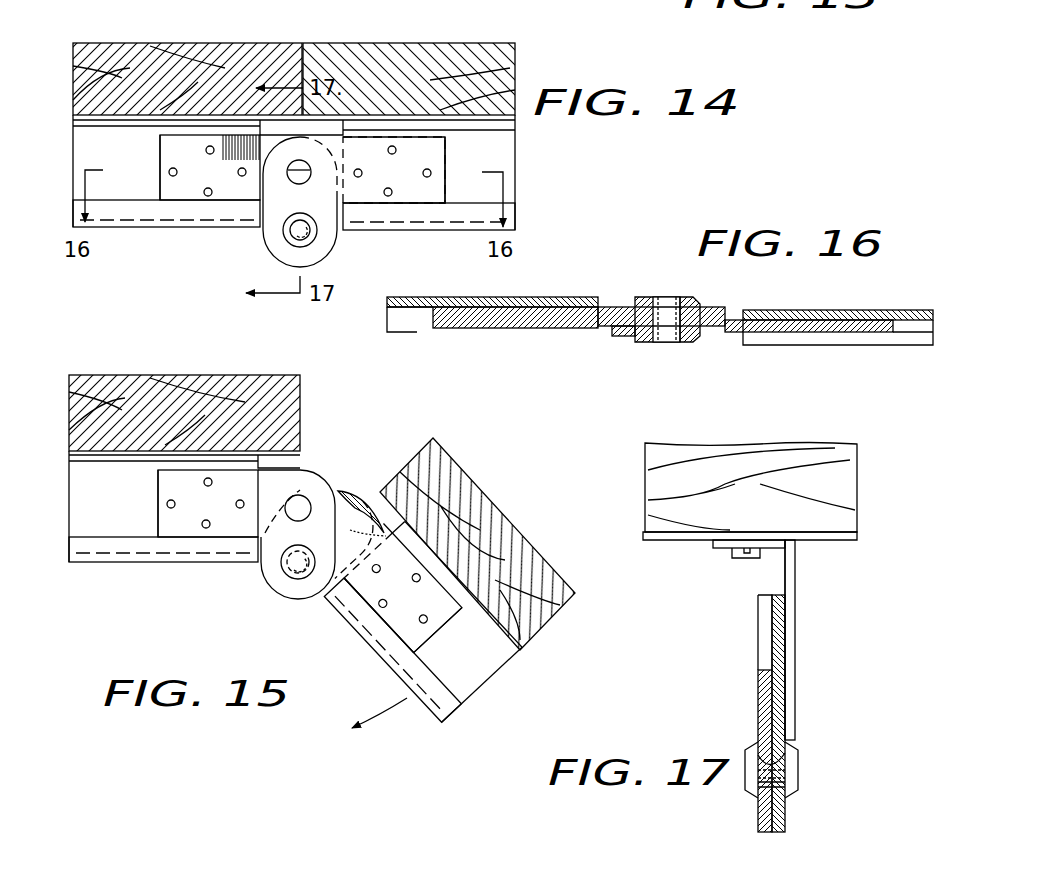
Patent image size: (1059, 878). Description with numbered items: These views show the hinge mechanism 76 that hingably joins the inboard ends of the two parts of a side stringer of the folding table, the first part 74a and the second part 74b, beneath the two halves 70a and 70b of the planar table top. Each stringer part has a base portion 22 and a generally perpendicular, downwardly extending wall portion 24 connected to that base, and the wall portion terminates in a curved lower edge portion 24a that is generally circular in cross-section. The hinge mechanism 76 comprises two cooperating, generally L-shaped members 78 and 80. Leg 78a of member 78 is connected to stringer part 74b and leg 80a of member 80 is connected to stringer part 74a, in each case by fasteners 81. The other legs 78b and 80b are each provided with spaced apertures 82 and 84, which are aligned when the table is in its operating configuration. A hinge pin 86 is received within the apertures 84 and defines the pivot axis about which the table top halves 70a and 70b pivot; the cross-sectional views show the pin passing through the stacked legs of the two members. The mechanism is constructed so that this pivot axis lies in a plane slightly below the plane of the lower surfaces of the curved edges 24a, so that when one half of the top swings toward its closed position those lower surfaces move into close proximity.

In FIG. 17, the base portion 22 is at (716, 553).
In FIG. 17, the wall portion 24 is at (800, 598).
In FIG. 14, the curved lower edge portion 24a is at (122, 232).
In FIG. 15, the curved lower edge portion 24a is at (100, 563).
In FIG. 14, the top half 70a is at (436, 46).
In FIG. 15, the top half 70a is at (490, 498).
In FIG. 14, the top half 70b is at (113, 48).
In FIG. 15, the top half 70b is at (92, 380).
In FIG. 17, the top half 70b is at (838, 488).
In FIG. 14, the side stringer first part 74a is at (510, 168).
In FIG. 16, the side stringer first part 74a is at (810, 313).
In FIG. 15, the side stringer first part 74a is at (477, 672).
In FIG. 14, the side stringer second part 74b is at (145, 192).
In FIG. 16, the side stringer second part 74b is at (487, 310).
In FIG. 15, the side stringer second part 74b is at (133, 530).
In FIG. 17, the side stringer second part 74b is at (797, 568).
In FIG. 14, the hinge mechanism 76 is at (343, 243).
In FIG. 16, the hinge mechanism 76 is at (690, 350).
In FIG. 15, the hinge mechanism 76 is at (278, 607).
In FIG. 17, the hinge mechanism 76 is at (808, 790).
In FIG. 14, the L-shaped hinge member 78 is at (193, 147).
In FIG. 16, the L-shaped hinge member 78 is at (568, 315).
In FIG. 15, the L-shaped hinge member 78 is at (300, 472).
In FIG. 17, the L-shaped hinge member 78 is at (780, 680).
In FIG. 14, the leg of hinge member 78a is at (160, 142).
In FIG. 15, the leg of hinge member 78a is at (158, 520).
In FIG. 15, the leg of hinge member 78b is at (267, 580).
In FIG. 14, the L-shaped hinge member 80 is at (367, 148).
In FIG. 16, the L-shaped hinge member 80 is at (862, 330).
In FIG. 15, the L-shaped hinge member 80 is at (350, 490).
In FIG. 17, the L-shaped hinge member 80 is at (760, 682).
In FIG. 14, the leg of hinge member 80a is at (428, 148).
In FIG. 15, the leg of hinge member 80a is at (405, 630).
In FIG. 15, the leg of hinge member 80b is at (360, 573).
In FIG. 14, the fasteners 81 is at (203, 192).
In FIG. 15, the fasteners 81 is at (167, 504).
In FIG. 14, the aperture 82 is at (291, 182).
In FIG. 15, the aperture 82 is at (290, 516).
In FIG. 17, the aperture 82 is at (760, 635).
In FIG. 14, the aperture 84 is at (290, 233).
In FIG. 16, the aperture 84 is at (662, 325).
In FIG. 15, the aperture 84 is at (298, 545).
In FIG. 17, the aperture 84 is at (790, 770).
In FIG. 14, the hinge pin 86 is at (294, 246).
In FIG. 16, the hinge pin 86 is at (668, 305).
In FIG. 15, the hinge pin 86 is at (284, 586).
In FIG. 17, the hinge pin 86 is at (750, 785).